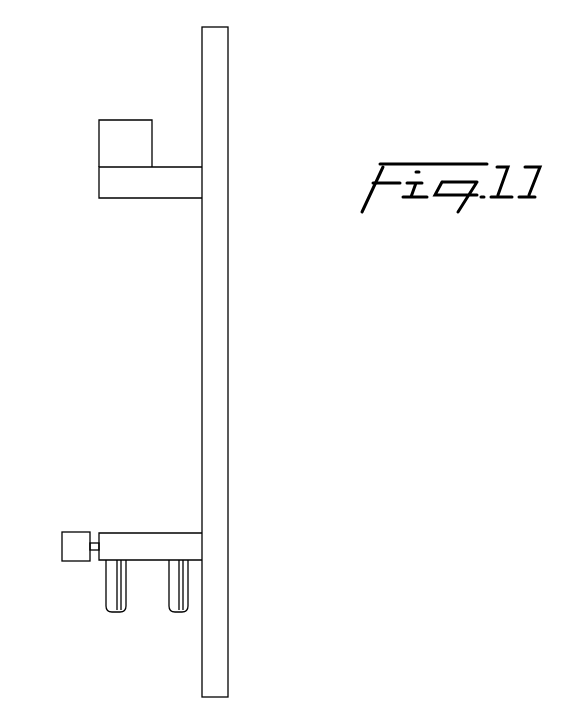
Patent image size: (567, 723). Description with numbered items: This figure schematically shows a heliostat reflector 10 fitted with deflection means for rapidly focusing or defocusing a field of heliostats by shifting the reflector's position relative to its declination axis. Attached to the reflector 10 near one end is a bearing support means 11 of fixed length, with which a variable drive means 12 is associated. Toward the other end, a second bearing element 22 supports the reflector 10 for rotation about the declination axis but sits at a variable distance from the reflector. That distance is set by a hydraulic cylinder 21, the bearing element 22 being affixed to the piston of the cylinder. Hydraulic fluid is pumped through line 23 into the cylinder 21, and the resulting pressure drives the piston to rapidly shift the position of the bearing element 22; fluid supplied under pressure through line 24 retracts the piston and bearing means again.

The reflector 10 is at (217, 172).
The bearing support means 11 is at (120, 185).
The variable drive means 12 is at (129, 133).
The hydraulic cylinder 21 is at (150, 538).
The second bearing element 22 is at (75, 538).
The line 23 is at (177, 598).
The line 24 is at (112, 593).